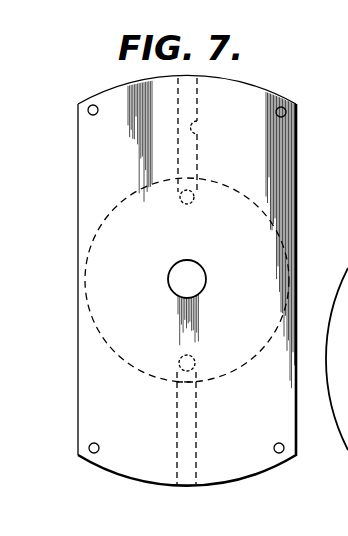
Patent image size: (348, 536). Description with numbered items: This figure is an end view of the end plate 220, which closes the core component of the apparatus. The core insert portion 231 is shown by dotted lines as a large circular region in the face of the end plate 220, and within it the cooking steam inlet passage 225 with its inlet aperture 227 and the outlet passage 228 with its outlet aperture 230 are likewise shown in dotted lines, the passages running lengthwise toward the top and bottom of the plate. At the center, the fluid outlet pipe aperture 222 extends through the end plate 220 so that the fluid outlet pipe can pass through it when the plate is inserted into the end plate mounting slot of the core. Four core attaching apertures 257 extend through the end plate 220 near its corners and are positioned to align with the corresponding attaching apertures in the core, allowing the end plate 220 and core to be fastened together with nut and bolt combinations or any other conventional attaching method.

The end plate 220 is at (273, 146).
The fluid outlet pipe aperture 222 is at (190, 262).
The cooking steam inlet passage 225 is at (199, 123).
The inlet aperture 227 is at (183, 203).
The outlet passage 228 is at (178, 446).
The outlet aperture 230 is at (183, 352).
The core insert portion 231 is at (107, 213).
The core attaching apertures 257 is at (94, 105).